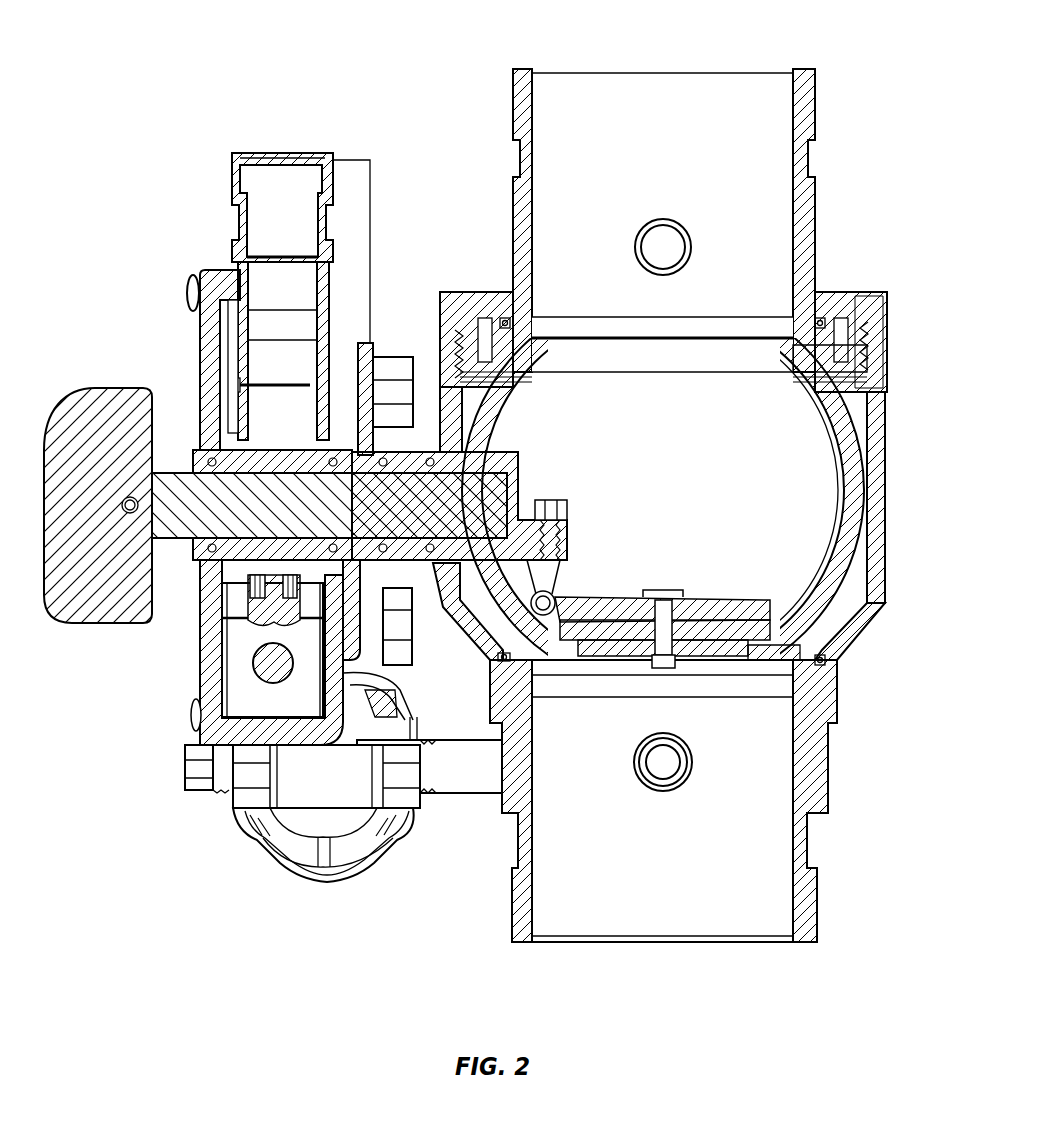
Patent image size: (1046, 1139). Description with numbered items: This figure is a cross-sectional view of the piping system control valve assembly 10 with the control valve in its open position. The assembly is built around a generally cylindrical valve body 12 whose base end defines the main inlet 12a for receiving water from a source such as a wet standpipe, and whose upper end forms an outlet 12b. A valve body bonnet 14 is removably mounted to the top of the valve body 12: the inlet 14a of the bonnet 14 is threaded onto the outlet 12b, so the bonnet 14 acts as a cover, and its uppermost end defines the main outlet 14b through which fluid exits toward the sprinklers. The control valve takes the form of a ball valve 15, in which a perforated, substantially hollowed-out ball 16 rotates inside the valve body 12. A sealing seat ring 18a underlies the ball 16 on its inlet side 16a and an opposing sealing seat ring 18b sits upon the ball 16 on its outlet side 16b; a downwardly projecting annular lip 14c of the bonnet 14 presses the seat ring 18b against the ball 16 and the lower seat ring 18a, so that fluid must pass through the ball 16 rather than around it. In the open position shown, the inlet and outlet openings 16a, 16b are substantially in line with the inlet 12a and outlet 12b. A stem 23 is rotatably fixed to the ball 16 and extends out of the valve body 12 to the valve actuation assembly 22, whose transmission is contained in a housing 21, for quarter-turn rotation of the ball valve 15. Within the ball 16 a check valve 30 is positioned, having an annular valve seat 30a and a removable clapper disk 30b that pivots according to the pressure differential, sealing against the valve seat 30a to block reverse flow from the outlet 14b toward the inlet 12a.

The control valve assembly 10 is at (212, 44).
The valve body 12 is at (889, 470).
The inlet of the valve body 12a is at (733, 945).
The outlet of the valve body 12b is at (885, 338).
The valve body bonnet 14 is at (818, 122).
The inlet of the bonnet 14a is at (446, 342).
The main outlet 14b is at (727, 68).
The annular lip 14c is at (850, 340).
The ball valve 15 is at (855, 425).
The ball 16 is at (853, 528).
The inlet opening of the ball 16a is at (760, 665).
The outlet opening of the ball 16b is at (797, 355).
The sealing seat ring 18a is at (498, 660).
The sealing seat ring 18b is at (528, 325).
The housing 21 is at (210, 340).
The valve actuation assembly 22 is at (208, 268).
The stem 23 is at (183, 520).
The check valve 30 is at (730, 600).
The valve seat 30a is at (572, 650).
The clapper disk 30b is at (700, 600).